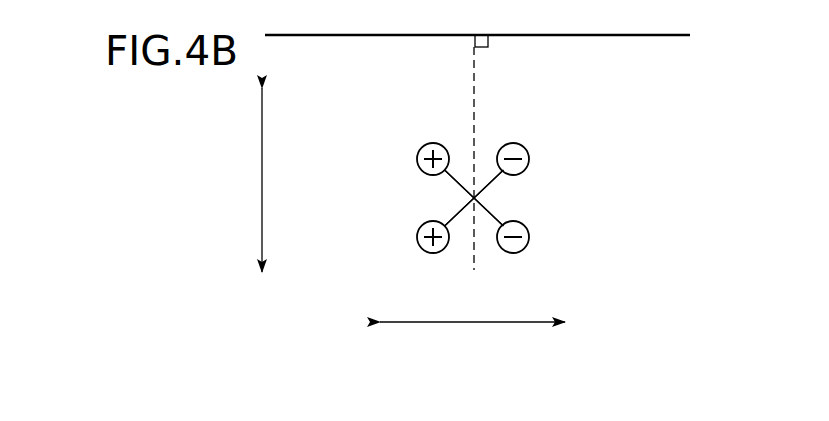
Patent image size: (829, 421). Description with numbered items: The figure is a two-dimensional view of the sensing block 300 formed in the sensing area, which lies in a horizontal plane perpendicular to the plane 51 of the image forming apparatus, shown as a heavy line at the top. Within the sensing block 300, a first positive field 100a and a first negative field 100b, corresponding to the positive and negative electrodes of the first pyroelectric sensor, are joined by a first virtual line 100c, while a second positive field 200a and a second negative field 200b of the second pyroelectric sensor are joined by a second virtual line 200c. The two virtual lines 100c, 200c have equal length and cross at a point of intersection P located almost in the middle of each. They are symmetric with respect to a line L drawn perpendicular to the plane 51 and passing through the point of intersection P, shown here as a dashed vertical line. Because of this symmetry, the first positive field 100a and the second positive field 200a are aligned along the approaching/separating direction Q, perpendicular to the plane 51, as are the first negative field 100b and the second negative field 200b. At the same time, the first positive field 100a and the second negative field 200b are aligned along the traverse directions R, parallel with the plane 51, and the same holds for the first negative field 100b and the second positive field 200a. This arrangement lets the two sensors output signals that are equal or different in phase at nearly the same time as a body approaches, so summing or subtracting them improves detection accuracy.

The plane of the image forming apparatus 51 is at (618, 36).
The sensing block 300 is at (655, 163).
The first positive field 100a is at (418, 229).
The first negative field 100b is at (529, 150).
The first virtual line 100c is at (487, 185).
The second positive field 200a is at (418, 152).
The second negative field 200b is at (529, 236).
The second virtual line 200c is at (502, 214).
The point of intersection P is at (480, 193).
The perpendicular line L is at (472, 80).
The approaching/separating direction Q is at (260, 197).
The traverse directions R is at (497, 323).